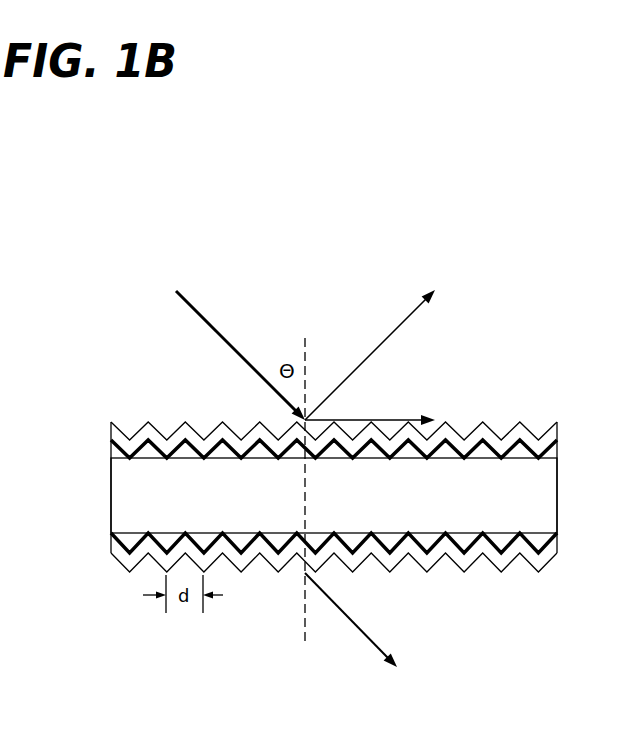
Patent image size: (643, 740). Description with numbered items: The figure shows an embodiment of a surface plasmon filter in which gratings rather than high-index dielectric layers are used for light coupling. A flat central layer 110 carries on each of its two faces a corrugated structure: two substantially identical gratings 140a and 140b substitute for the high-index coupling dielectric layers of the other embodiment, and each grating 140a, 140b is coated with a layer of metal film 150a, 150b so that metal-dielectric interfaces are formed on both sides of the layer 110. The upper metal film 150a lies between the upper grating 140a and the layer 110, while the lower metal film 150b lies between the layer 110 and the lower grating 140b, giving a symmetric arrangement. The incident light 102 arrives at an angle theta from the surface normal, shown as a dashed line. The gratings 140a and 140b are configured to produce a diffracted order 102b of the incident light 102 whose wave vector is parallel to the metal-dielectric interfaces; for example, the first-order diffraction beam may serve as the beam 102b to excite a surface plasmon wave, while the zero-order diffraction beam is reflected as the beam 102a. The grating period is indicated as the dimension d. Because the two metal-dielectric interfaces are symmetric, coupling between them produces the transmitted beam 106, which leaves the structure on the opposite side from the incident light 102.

The incident light 102 is at (195, 313).
The reflected beam 102a is at (408, 318).
The diffracted order 102b is at (390, 418).
The transmitted beam 106 is at (370, 638).
The substrate 110 is at (507, 509).
The grating 140a is at (557, 422).
The grating 140b is at (557, 552).
The metal film 150a is at (110, 441).
The metal film 150b is at (110, 533).